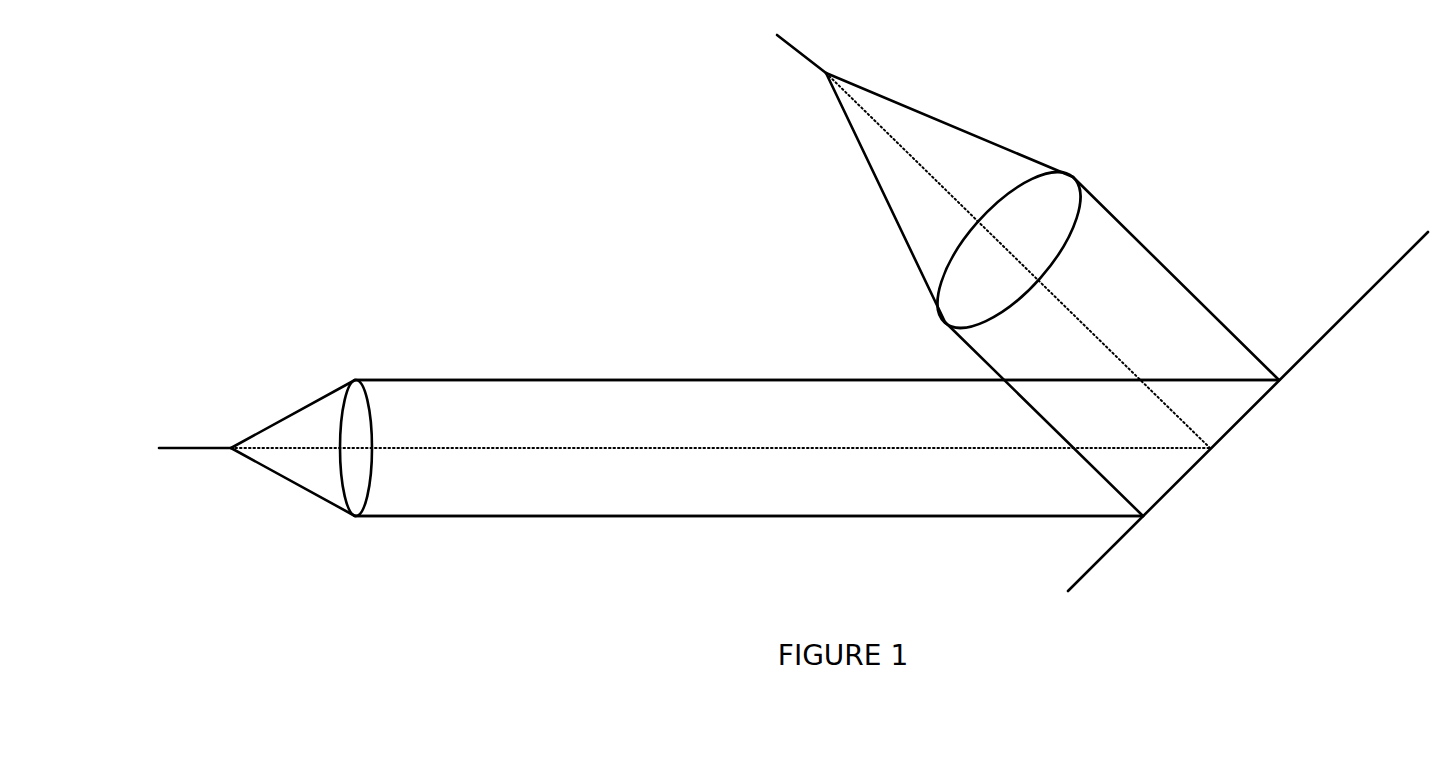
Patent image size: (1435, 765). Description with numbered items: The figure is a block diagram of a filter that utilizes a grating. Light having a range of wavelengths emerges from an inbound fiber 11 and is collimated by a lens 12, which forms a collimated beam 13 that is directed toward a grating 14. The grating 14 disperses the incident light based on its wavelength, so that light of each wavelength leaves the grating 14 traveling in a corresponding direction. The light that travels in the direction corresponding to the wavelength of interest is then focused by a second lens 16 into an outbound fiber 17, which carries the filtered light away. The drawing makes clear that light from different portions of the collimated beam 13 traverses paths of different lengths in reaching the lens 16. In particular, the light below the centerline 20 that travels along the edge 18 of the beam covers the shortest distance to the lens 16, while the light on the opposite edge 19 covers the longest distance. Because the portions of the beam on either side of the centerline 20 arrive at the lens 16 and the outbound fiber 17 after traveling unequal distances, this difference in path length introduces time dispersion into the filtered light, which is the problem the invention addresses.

The inbound fiber 11 is at (182, 449).
The lens 12 is at (360, 484).
The collimated beam 13 is at (565, 405).
The grating 14 is at (1097, 557).
The lens 16 is at (1062, 238).
The outbound fiber 17 is at (788, 48).
The edge 18 is at (815, 517).
The opposite edge 19 is at (792, 380).
The centerline 20 is at (688, 447).